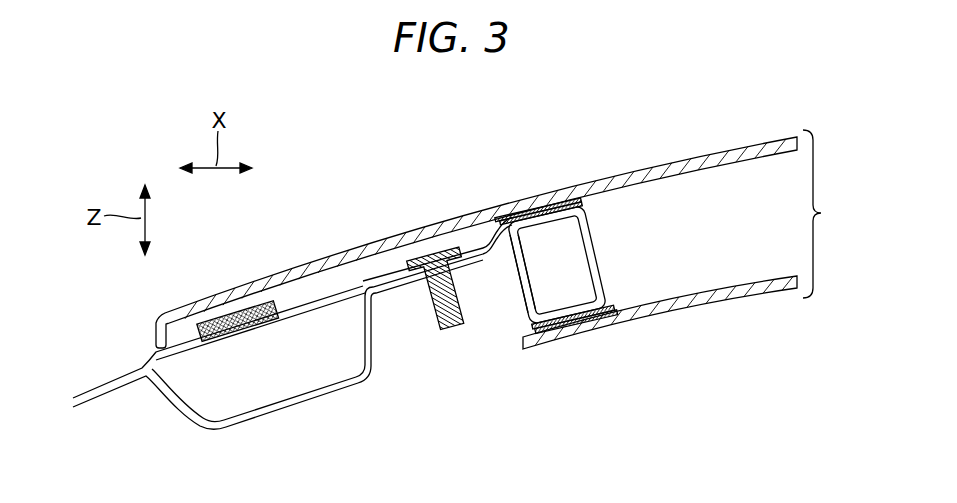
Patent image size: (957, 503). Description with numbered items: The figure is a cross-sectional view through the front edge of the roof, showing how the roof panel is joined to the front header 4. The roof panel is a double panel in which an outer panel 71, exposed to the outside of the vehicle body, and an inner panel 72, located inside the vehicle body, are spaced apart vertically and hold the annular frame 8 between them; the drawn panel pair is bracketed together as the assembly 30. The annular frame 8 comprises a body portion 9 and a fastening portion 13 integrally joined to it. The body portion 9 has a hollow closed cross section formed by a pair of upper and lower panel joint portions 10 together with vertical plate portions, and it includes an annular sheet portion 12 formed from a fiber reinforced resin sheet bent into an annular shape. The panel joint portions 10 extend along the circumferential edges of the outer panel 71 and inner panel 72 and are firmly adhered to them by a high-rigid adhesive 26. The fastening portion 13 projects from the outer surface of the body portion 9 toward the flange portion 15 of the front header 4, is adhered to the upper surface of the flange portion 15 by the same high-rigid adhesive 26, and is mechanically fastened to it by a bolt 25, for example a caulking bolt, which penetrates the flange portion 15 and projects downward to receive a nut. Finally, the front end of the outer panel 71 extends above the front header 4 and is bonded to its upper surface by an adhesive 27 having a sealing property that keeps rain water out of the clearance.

The front header 4 is at (177, 410).
The annular frame 8 is at (620, 262).
The body portion 9 is at (592, 231).
The panel joint portion 10 is at (552, 218).
The annular sheet portion 12 is at (517, 283).
The fastening portion 13 is at (470, 250).
The flange portion 15 is at (400, 297).
The bolt 25 is at (452, 332).
The high-rigid adhesive 26 is at (524, 212).
The adhesive 27 is at (195, 318).
The panel assembly 30 is at (829, 214).
The outer panel 71 is at (737, 150).
The inner panel 72 is at (762, 292).